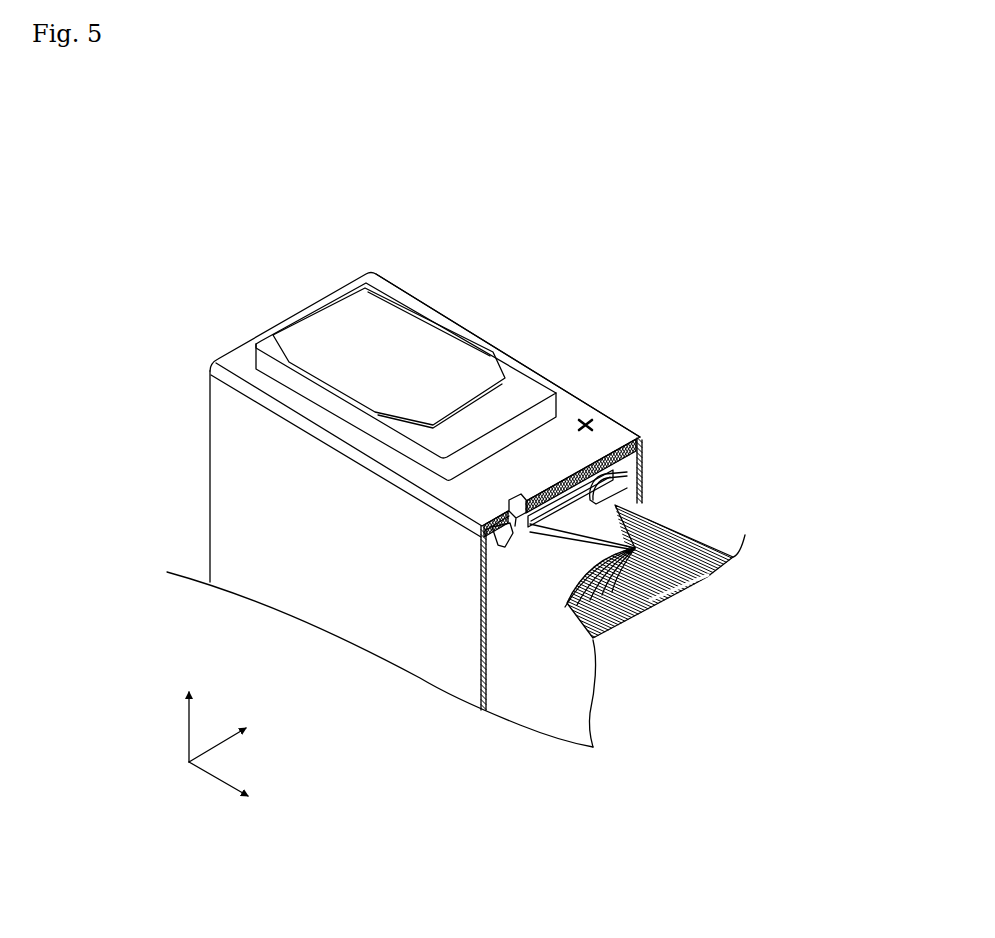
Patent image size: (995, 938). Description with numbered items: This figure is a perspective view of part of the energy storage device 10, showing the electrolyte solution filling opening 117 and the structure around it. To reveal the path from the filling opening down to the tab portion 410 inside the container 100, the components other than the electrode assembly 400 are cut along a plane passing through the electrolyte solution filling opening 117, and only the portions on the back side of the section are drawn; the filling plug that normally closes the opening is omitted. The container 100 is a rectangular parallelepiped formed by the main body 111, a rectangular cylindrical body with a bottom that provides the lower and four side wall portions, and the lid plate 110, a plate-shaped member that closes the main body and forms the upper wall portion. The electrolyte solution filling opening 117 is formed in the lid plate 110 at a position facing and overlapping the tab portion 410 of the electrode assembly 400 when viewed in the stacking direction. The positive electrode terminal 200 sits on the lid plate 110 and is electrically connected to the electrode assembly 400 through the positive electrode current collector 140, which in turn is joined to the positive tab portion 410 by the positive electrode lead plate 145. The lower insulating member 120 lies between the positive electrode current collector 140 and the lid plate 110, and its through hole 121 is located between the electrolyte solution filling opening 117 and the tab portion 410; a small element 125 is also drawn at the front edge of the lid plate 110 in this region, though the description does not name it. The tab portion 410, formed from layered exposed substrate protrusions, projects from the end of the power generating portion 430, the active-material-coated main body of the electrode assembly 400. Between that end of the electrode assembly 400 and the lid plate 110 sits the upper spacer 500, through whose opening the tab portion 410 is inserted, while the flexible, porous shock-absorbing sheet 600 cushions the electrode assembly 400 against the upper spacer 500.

The energy storage device 10 is at (266, 249).
The container 100 is at (132, 287).
The lid plate 110 is at (235, 357).
The main body 111 is at (232, 407).
The electrolyte solution filling opening 117 is at (533, 378).
The lower insulating member 120 is at (643, 462).
The through hole 121 is at (540, 535).
The connector 125 is at (517, 500).
The positive electrode current collector 140 is at (630, 470).
The positive electrode lead plate 145 is at (513, 515).
The positive electrode terminal 200 is at (403, 345).
The electrode assembly 400 is at (706, 516).
The tab portion 410 is at (588, 560).
The power generating portion 430 is at (533, 697).
The upper spacer 500 is at (643, 488).
The shock-absorbing sheet 600 is at (643, 510).